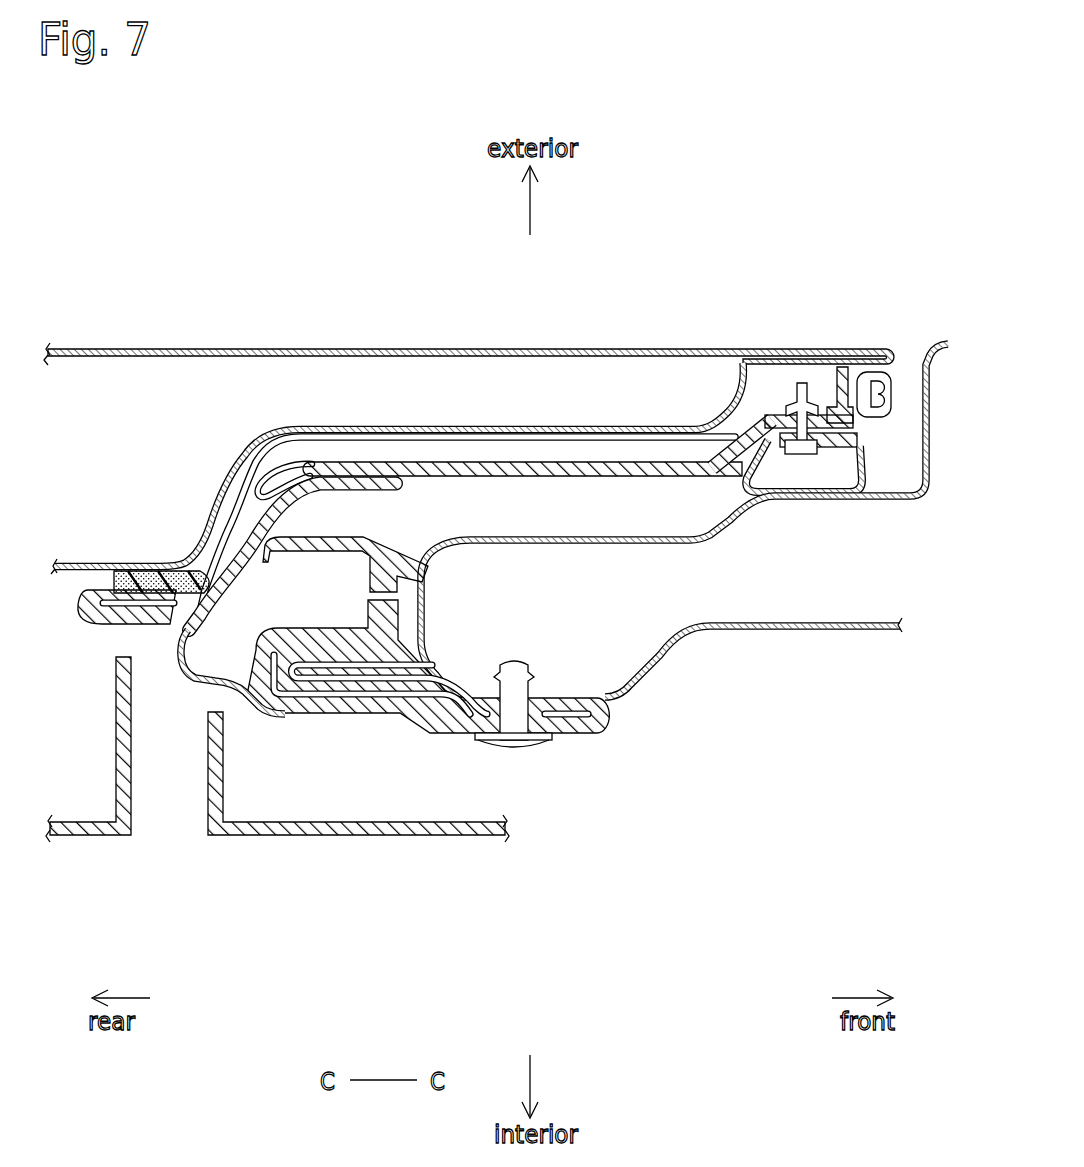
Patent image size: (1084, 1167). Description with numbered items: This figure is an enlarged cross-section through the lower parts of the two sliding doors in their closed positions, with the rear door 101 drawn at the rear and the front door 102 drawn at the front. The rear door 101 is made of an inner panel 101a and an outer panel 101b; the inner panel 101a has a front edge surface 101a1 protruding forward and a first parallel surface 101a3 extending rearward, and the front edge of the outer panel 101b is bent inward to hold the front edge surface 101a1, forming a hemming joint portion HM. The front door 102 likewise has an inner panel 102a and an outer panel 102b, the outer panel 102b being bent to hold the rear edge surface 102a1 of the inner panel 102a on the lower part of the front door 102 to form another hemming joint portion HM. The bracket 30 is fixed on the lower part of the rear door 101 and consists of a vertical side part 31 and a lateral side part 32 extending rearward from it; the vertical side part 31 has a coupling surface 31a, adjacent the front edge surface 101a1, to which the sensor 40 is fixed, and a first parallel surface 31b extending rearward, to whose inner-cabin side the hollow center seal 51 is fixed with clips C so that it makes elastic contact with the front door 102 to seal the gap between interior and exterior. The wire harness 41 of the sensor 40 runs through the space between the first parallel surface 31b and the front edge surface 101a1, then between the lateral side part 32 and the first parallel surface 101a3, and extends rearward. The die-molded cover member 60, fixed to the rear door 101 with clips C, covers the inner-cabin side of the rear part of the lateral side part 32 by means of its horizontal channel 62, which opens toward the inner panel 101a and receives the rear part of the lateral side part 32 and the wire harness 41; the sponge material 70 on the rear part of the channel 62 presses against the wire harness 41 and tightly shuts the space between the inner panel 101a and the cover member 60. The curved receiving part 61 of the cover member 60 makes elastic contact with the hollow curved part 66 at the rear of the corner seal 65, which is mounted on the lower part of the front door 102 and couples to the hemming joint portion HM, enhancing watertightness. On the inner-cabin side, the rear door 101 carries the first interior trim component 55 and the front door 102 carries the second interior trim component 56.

The rear door 101 is at (323, 347).
The inner panel 101a is at (722, 378).
The front edge surface 101a1 is at (792, 359).
The first parallel surface 101a3 is at (520, 427).
The outer panel 101b is at (440, 345).
The front door 102 is at (950, 344).
The inner panel 102a is at (752, 636).
The rear edge surface 102a1 is at (352, 672).
The outer panel 102b is at (750, 540).
The bracket 30 is at (585, 393).
The vertical side part 31 is at (816, 348).
The coupling surface 31a is at (845, 365).
The first parallel surface 31b is at (748, 364).
The lateral side part 32 is at (605, 478).
The sensor 40 is at (907, 382).
The wire harness 41 is at (373, 443).
The center seal 51 is at (872, 490).
The first interior trim component 55 is at (80, 840).
The second interior trim component 56 is at (296, 840).
The cover member 60 is at (110, 633).
The receiving part 61 is at (242, 597).
The channel 62 is at (313, 462).
The corner seal 65 is at (272, 712).
The curved part 66 is at (176, 648).
The sponge material 70 is at (126, 580).
The hemming joint portion HM is at (896, 385).
The clips C is at (497, 680).